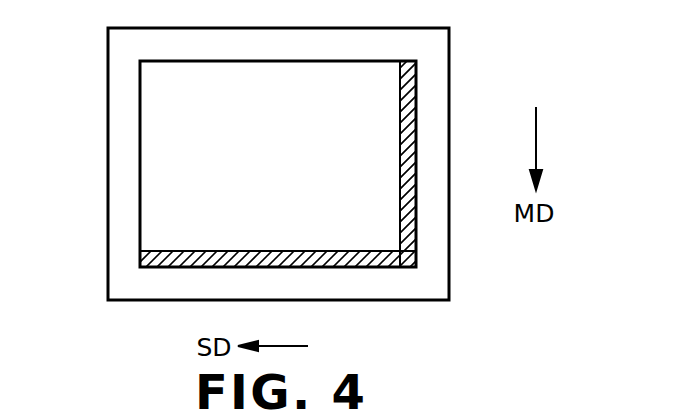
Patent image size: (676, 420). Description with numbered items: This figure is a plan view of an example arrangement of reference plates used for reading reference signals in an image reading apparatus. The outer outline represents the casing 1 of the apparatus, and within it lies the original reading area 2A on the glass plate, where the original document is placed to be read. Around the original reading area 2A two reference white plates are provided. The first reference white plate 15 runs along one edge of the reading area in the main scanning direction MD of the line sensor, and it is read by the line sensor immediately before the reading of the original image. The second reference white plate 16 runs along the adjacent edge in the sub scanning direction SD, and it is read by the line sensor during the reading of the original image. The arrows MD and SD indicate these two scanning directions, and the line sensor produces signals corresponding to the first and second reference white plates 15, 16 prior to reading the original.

The casing 1 is at (122, 118).
The original reading area 2A is at (155, 183).
The first reference white plate 15 is at (417, 145).
The second reference white plate 16 is at (357, 268).